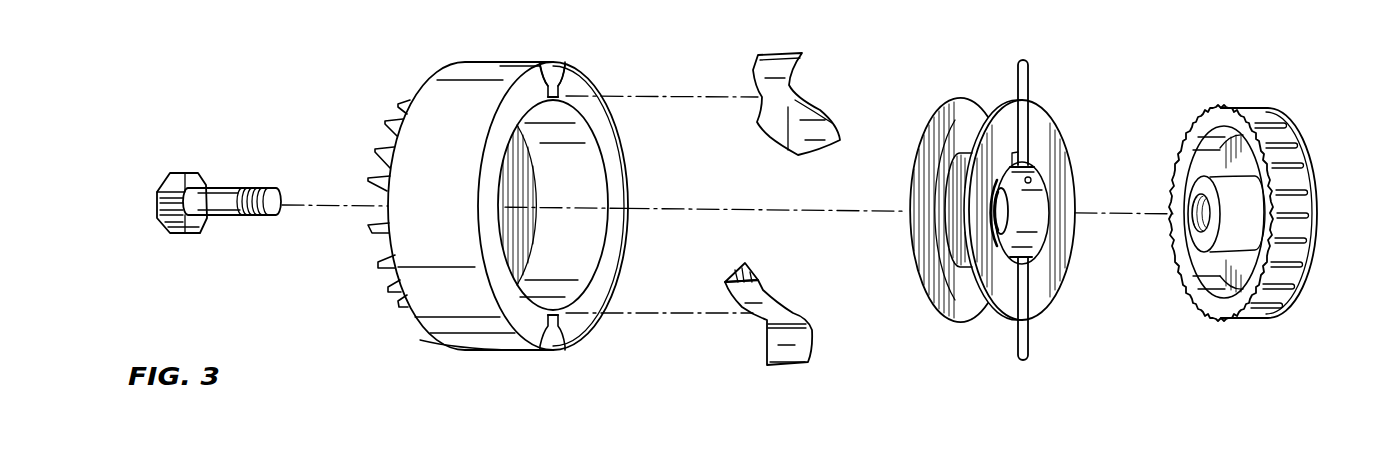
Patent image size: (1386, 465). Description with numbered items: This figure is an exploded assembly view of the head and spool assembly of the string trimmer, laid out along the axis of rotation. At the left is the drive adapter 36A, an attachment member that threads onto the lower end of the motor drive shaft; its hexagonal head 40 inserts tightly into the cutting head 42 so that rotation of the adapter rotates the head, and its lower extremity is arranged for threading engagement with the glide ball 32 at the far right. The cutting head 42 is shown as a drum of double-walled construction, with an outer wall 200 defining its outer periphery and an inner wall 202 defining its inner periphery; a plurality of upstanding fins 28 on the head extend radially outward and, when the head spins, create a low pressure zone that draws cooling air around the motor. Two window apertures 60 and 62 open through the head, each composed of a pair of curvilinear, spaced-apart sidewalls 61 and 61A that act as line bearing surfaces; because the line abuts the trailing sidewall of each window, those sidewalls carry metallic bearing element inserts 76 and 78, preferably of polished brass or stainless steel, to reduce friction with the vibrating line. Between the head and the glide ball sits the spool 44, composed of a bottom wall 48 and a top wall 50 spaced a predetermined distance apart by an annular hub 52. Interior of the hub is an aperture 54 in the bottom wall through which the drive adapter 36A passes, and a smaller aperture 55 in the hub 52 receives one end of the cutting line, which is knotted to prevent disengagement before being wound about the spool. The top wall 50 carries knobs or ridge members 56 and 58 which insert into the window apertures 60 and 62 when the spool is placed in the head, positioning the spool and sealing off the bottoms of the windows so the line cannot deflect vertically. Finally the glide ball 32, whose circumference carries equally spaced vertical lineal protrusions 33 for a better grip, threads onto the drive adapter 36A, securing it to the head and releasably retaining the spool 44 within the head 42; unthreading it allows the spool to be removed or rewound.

The upstanding fins 28 is at (378, 268).
The glide ball 32 is at (1320, 214).
The vertical lineal protrusions 33 is at (1283, 145).
The drive adapter 36A is at (227, 187).
The hexagonal head 40 is at (176, 236).
The cutting head 42 is at (423, 351).
The spool 44 is at (953, 70).
The bottom wall 48 is at (930, 305).
The top wall 50 is at (1047, 287).
The annular hub 52 is at (950, 197).
The aperture 54 is at (1006, 224).
The aperture 55 is at (1033, 178).
The knob 56 is at (1029, 66).
The knob 58 is at (1026, 345).
The window aperture 60 is at (552, 70).
The sidewall 61 is at (567, 80).
The sidewall 61A is at (541, 66).
The window aperture 62 is at (553, 350).
The metallic bearing element insert 76 is at (777, 62).
The metallic bearing element insert 78 is at (773, 345).
The outer wall 200 is at (433, 95).
The inner wall 202 is at (583, 167).